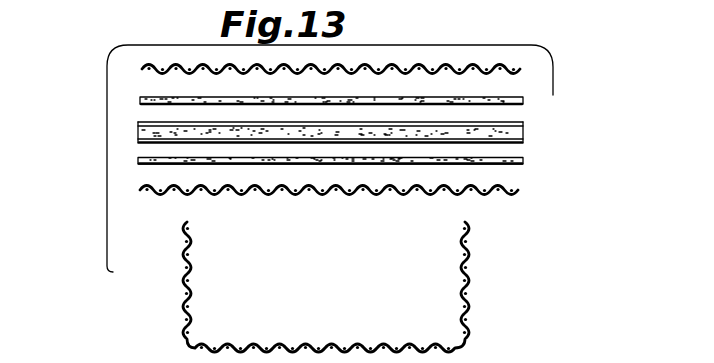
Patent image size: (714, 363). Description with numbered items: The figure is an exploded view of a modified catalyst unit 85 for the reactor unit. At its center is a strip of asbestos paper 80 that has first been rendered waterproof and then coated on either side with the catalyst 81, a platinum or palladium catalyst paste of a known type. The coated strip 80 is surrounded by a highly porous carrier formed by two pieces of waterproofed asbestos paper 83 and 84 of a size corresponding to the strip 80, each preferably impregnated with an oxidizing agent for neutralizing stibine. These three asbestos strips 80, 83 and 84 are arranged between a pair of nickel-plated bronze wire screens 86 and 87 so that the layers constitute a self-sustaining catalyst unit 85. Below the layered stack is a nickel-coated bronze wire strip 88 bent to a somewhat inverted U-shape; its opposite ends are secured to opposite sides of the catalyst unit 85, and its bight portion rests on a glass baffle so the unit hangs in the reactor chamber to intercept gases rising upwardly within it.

The strip of asbestos paper 80 is at (523, 140).
The catalyst 81 is at (138, 139).
The waterproofed asbestos paper 83 is at (140, 100).
The waterproofed asbestos paper 84 is at (523, 167).
The catalyst unit 85 is at (129, 128).
The nickel-plated bronze wire screen 86 is at (142, 69).
The nickel-plated bronze wire screen 87 is at (140, 190).
The nickel-coated bronze wire strip 88 is at (178, 280).